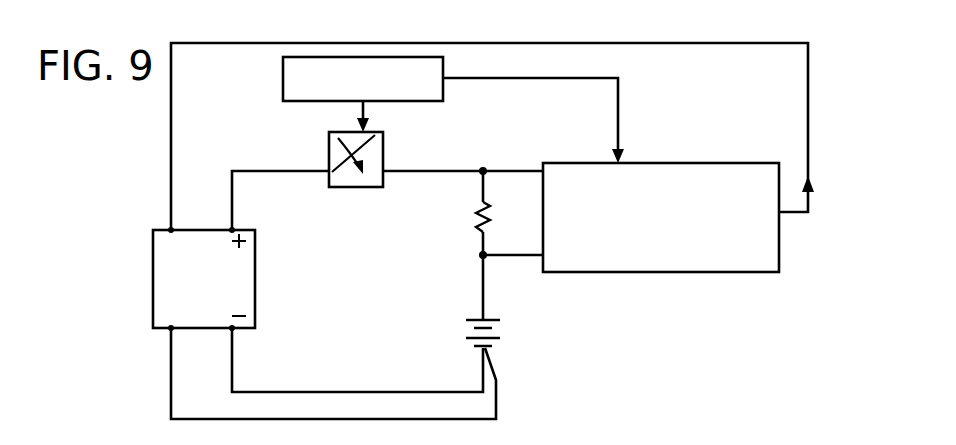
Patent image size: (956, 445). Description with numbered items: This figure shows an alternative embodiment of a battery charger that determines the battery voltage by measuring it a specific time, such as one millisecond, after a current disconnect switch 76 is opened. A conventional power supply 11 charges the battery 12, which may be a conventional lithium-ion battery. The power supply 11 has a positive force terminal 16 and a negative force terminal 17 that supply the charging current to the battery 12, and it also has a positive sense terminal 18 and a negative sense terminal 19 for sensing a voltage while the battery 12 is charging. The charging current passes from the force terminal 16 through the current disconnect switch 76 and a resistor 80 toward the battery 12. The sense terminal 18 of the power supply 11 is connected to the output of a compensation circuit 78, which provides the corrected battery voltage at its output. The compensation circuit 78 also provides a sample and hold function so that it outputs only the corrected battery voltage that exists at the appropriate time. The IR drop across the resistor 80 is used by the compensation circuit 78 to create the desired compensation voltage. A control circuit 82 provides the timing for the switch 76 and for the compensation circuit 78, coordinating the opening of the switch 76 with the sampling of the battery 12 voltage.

The power supply 11 is at (255, 275).
The battery 12 is at (472, 333).
The positive force terminal 16 is at (230, 229).
The negative force terminal 17 is at (230, 330).
The positive sense terminal 18 is at (169, 229).
The negative sense terminal 19 is at (169, 330).
The current disconnect switch 76 is at (383, 155).
The compensation circuit 78 is at (617, 272).
The resistor 80 is at (477, 216).
The control circuit 82 is at (283, 78).